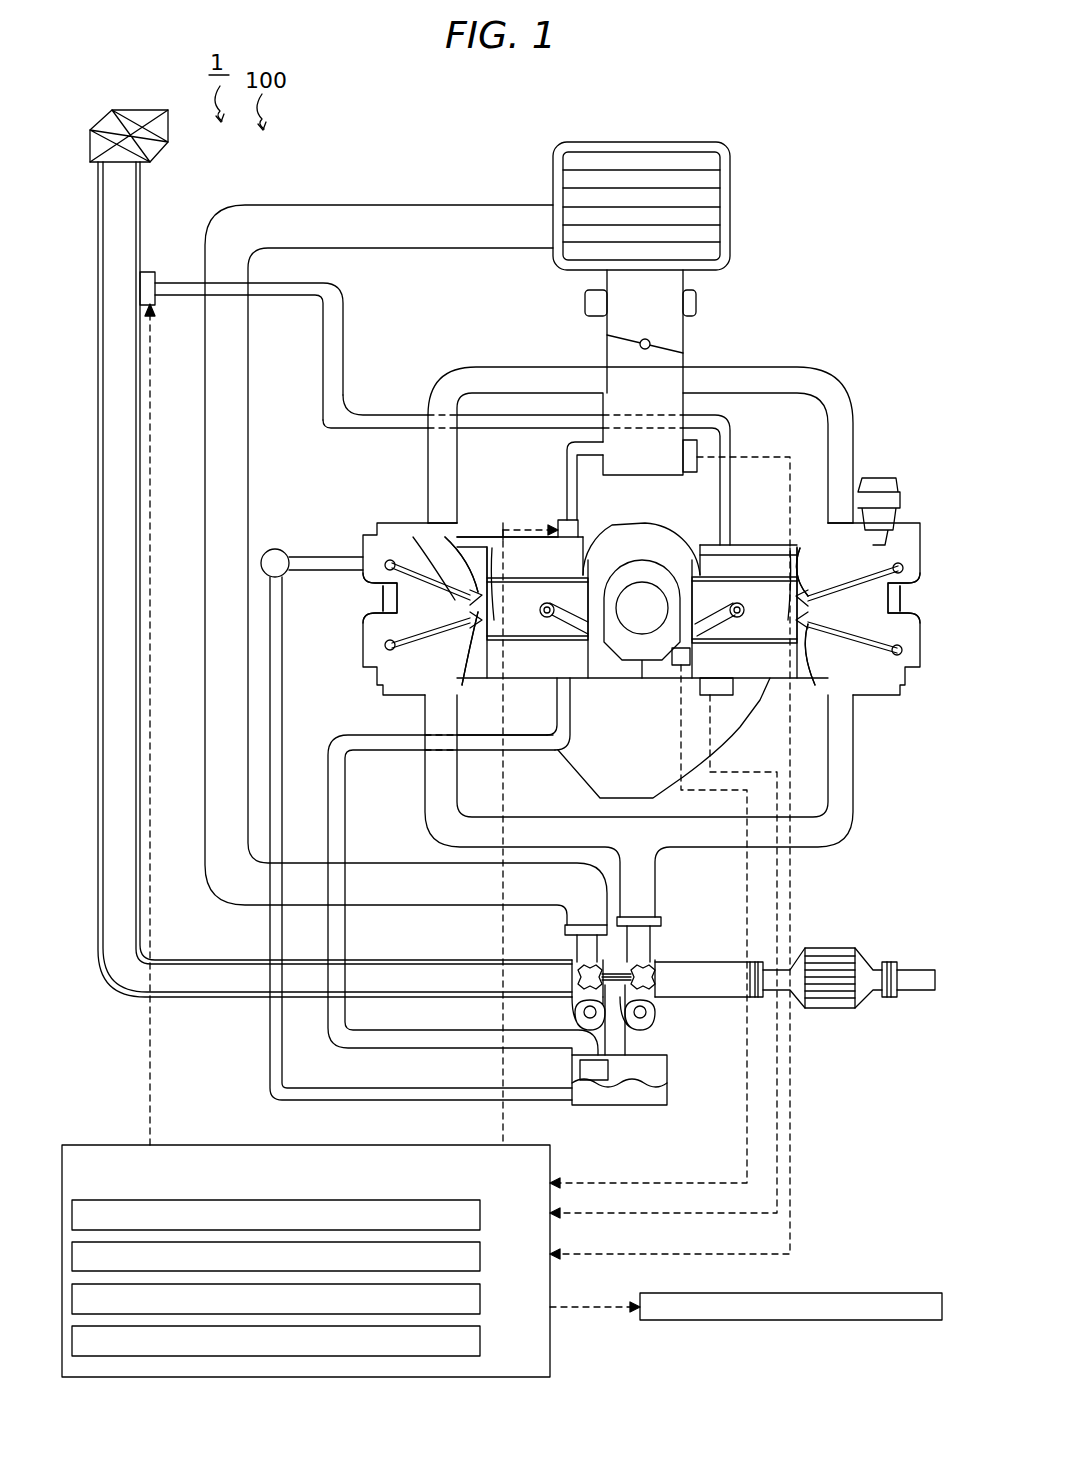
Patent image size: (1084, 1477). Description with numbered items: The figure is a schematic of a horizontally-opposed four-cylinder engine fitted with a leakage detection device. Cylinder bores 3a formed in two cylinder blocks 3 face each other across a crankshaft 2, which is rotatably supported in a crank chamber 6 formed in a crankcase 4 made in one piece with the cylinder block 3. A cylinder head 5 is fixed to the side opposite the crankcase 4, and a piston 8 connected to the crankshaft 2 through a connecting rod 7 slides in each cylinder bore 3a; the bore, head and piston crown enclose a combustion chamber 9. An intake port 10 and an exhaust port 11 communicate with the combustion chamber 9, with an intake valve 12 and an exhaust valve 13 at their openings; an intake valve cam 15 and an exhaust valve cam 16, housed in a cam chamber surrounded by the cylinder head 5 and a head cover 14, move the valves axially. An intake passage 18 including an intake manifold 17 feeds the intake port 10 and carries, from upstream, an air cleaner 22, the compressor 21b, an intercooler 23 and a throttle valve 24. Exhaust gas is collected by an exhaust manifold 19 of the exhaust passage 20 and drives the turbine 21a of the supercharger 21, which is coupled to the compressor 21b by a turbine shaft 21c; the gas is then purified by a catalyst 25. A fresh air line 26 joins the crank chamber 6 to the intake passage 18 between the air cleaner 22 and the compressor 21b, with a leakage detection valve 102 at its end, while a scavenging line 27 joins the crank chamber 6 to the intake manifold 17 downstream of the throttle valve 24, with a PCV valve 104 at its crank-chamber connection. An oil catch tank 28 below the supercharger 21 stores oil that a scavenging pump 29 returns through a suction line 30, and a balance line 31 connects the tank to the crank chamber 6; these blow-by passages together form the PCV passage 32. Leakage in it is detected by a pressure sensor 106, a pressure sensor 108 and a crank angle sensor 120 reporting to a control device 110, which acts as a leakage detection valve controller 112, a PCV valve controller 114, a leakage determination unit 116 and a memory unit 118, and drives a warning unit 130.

The crankshaft 2 is at (638, 580).
The cylinder block 3 is at (538, 540).
The cylinder bore 3a is at (511, 558).
The crankcase 4 is at (618, 662).
The cylinder head 5 is at (476, 545).
The crank chamber 6 is at (570, 650).
The connecting rod 7 is at (568, 628).
The piston 8 is at (545, 618).
The combustion chamber 9 is at (494, 553).
The intake port 10 is at (449, 585).
The exhaust port 11 is at (446, 663).
The intake valve 12 is at (452, 587).
The exhaust valve 13 is at (475, 630).
The head cover 14 is at (363, 634).
The intake valve cam 15 is at (375, 569).
The exhaust valve cam 16 is at (372, 642).
The intake manifold 17 is at (428, 502).
The intake passage 18 is at (340, 205).
The exhaust manifold 19 is at (423, 806).
The exhaust passage 20 is at (873, 965).
The supercharger 21 is at (625, 971).
The turbine 21a is at (647, 980).
The compressor 21b is at (572, 976).
The turbine shaft 21c is at (638, 978).
The air cleaner 22 is at (130, 110).
The intercooler 23 is at (630, 147).
The throttle valve 24 is at (673, 350).
The catalyst 25 is at (832, 1008).
The fresh air line 26 is at (722, 439).
The scavenging line 27 is at (570, 472).
The oil catch tank 28 is at (572, 1082).
The scavenging pump 29 is at (281, 547).
The suction line 30 is at (432, 1088).
The balance line 31 is at (395, 724).
The PCV passage 32 is at (358, 382).
The leakage detection valve 102 is at (167, 274).
The PCV valve 104 is at (577, 526).
The pressure sensor 106 is at (716, 698).
The pressure sensor 108 is at (689, 474).
The control device 110 is at (550, 1346).
The leakage detection valve controller 112 is at (482, 1216).
The PCV valve controller 114 is at (482, 1258).
The leakage determination unit 116 is at (482, 1298).
The memory unit 118 is at (482, 1339).
The crank angle sensor 120 is at (680, 667).
The warning unit 130 is at (889, 1322).